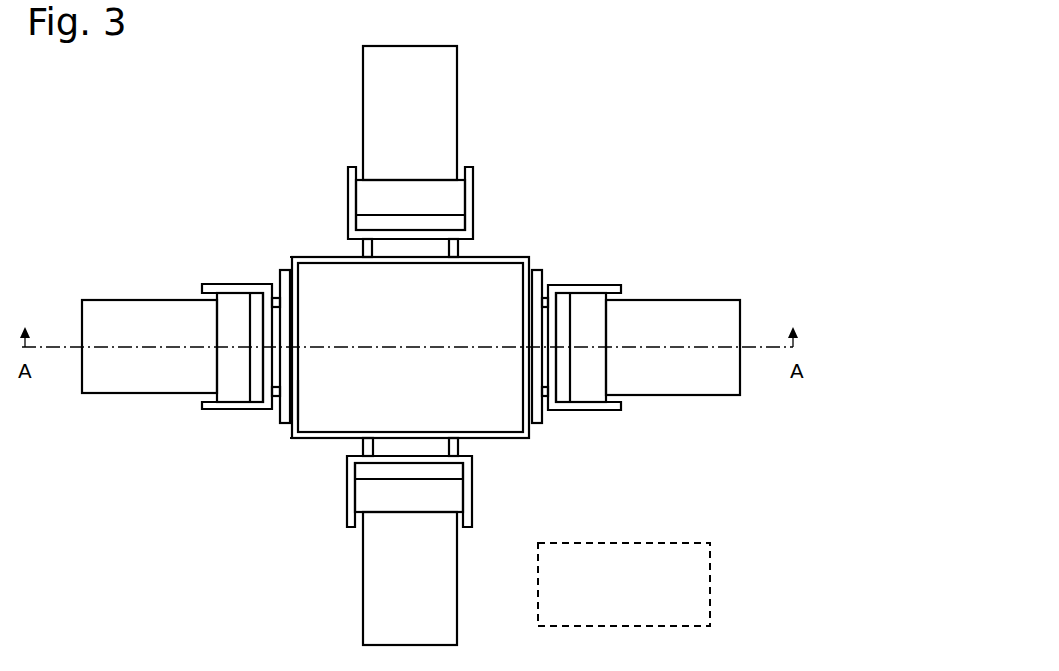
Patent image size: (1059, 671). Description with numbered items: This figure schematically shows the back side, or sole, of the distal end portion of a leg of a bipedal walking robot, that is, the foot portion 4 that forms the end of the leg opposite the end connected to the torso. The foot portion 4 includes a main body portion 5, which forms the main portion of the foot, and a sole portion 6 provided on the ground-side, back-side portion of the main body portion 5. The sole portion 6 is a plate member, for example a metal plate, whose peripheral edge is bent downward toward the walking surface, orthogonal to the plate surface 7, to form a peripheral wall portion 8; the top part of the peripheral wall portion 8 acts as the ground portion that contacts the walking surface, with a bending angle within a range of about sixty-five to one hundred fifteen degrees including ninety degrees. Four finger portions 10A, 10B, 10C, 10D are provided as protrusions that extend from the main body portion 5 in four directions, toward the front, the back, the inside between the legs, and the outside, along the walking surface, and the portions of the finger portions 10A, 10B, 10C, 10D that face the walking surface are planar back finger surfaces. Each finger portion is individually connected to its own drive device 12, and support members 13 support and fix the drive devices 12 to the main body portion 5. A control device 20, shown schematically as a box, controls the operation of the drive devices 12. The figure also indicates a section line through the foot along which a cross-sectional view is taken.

The foot portion 4 is at (532, 265).
The main body portion 5 is at (308, 257).
The sole portion 6 is at (495, 438).
The plate surface 7 is at (445, 332).
The peripheral wall portion 8 is at (298, 405).
The finger portion 10A is at (362, 110).
The finger portion 10B is at (702, 300).
The finger portion 10C is at (362, 600).
The finger portion 10D is at (115, 300).
The drive device 12 is at (422, 192).
The support member 13 is at (490, 165).
The control device 20 is at (683, 543).